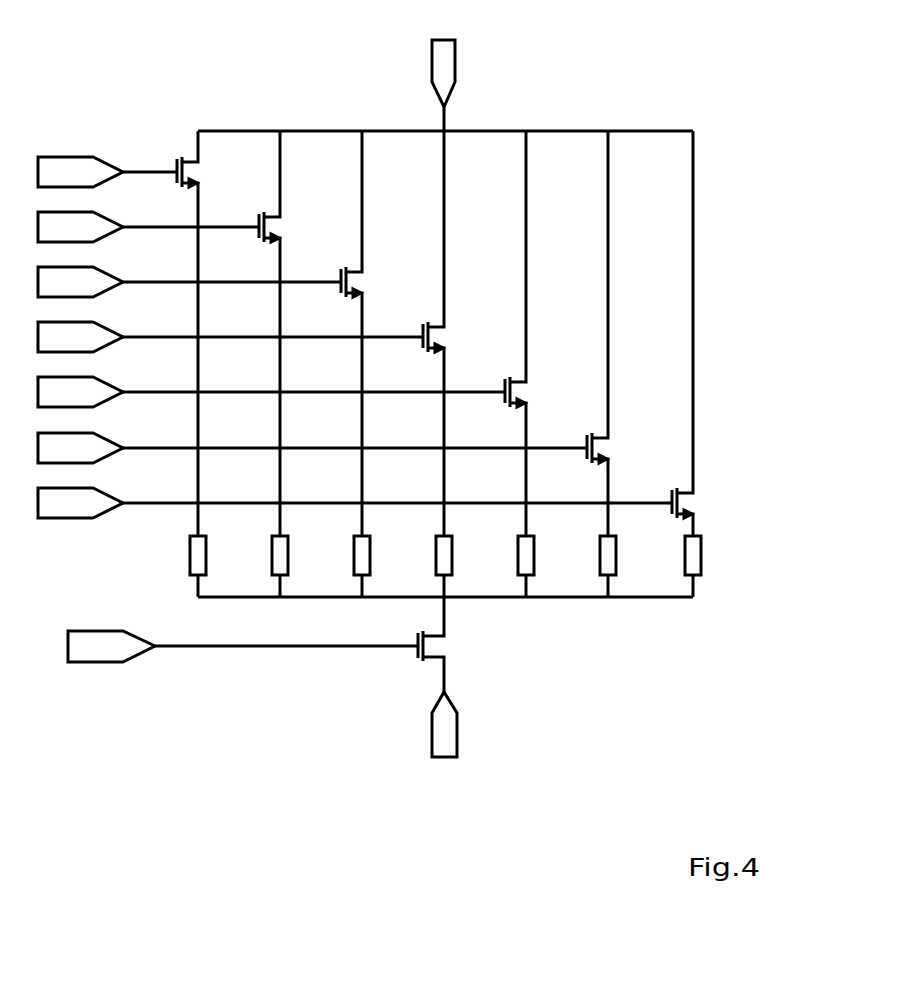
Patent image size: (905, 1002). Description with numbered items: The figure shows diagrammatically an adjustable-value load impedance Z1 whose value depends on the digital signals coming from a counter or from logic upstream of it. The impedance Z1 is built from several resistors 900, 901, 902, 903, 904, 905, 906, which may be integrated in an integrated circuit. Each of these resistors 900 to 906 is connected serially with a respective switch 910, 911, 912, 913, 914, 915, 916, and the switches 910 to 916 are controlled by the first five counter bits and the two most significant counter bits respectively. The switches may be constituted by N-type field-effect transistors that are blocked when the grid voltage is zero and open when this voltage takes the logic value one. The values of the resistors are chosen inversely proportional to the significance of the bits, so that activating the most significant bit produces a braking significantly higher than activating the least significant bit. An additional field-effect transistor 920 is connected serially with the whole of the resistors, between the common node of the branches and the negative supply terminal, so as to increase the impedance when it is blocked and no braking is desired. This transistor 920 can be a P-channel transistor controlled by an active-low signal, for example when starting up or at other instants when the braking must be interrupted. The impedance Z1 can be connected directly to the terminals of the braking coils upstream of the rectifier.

The adjustable load impedance Z1 is at (399, 441).
The resistor 900 is at (198, 171).
The resistor 901 is at (280, 226).
The resistor 902 is at (362, 281).
The resistor 903 is at (444, 336).
The resistor 904 is at (526, 391).
The resistor 905 is at (608, 447).
The resistor 906 is at (693, 502).
The switch 910 is at (199, 552).
The switch 911 is at (281, 552).
The switch 912 is at (363, 552).
The switch 913 is at (445, 552).
The switch 914 is at (527, 552).
The switch 915 is at (609, 552).
The switch 916 is at (694, 552).
The additional field-effect transistor 920 is at (447, 647).